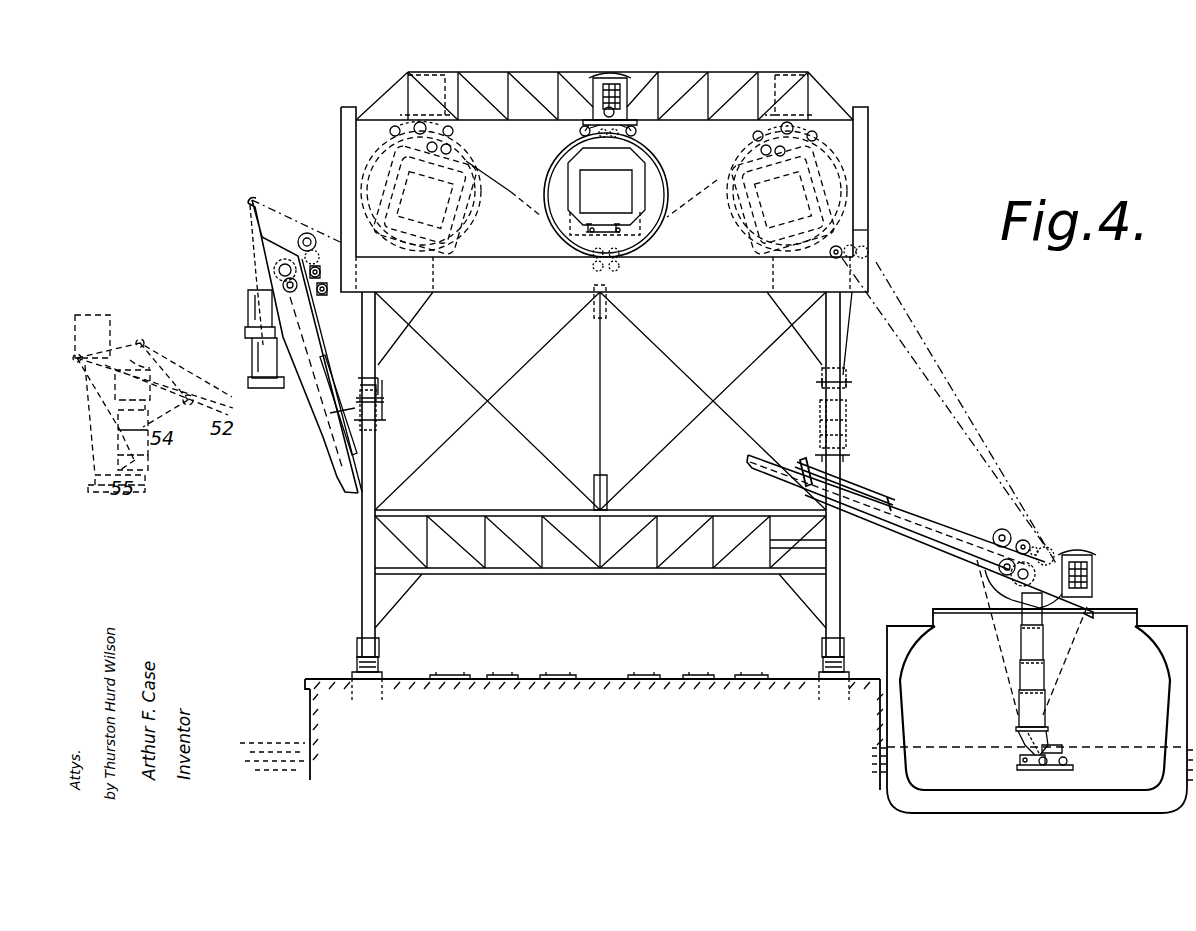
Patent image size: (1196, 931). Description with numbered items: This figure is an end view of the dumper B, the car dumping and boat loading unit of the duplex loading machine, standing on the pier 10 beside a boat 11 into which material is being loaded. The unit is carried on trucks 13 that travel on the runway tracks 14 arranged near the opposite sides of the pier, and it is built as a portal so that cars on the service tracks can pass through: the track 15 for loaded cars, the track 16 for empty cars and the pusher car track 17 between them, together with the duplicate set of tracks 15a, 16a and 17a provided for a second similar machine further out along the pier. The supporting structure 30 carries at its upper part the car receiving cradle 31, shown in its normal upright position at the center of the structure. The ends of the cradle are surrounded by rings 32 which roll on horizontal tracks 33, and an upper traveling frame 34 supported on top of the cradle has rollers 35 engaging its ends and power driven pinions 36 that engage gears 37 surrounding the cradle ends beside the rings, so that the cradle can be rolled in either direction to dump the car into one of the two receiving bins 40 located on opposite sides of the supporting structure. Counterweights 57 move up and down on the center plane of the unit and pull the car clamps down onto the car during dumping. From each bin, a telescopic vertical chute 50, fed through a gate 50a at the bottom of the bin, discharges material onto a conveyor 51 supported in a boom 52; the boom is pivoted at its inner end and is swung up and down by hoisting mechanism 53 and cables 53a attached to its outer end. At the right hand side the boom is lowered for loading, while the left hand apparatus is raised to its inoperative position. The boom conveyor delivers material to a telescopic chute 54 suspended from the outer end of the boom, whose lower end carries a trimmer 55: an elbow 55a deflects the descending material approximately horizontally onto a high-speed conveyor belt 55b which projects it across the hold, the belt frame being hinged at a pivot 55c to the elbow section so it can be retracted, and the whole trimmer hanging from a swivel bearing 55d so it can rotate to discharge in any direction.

The pier 10 is at (613, 690).
The boat 11 is at (1160, 628).
The truck 13 is at (378, 664).
The track 14 is at (354, 676).
The track for loaded cars 15 is at (645, 675).
The duplicate track for loaded cars 15a is at (556, 675).
The track for empty cars 16 is at (754, 675).
The duplicate track for empty cars 16a is at (446, 675).
The pusher car track 17 is at (699, 675).
The duplicate pusher car track 17a is at (501, 675).
The supporting structure 30 is at (355, 566).
The car receiving cradle 31 is at (474, 224).
The ring 32 is at (664, 185).
The horizontal track 33 is at (530, 262).
The upper traveling frame 34 is at (628, 118).
The roller 35 is at (638, 131).
The power driven pinion 36 is at (583, 124).
The gear 37 is at (640, 182).
The receiving bin 40 is at (382, 348).
The vertical chute 50 is at (386, 412).
The gate 50a is at (848, 380).
The conveyor 51 is at (313, 386).
The boom 52 is at (318, 372).
The hoisting mechanism 53 is at (870, 252).
The cable 53a is at (966, 412).
The telescopic chute 54 is at (248, 313).
The trimmer 55 is at (266, 372).
The elbow 55a is at (1020, 733).
The conveyor belt 55b is at (1050, 768).
The pivot 55c is at (1050, 750).
The swivel bearing 55d is at (1035, 740).
The counterweight 57 is at (592, 318).
The dumper B is at (868, 232).